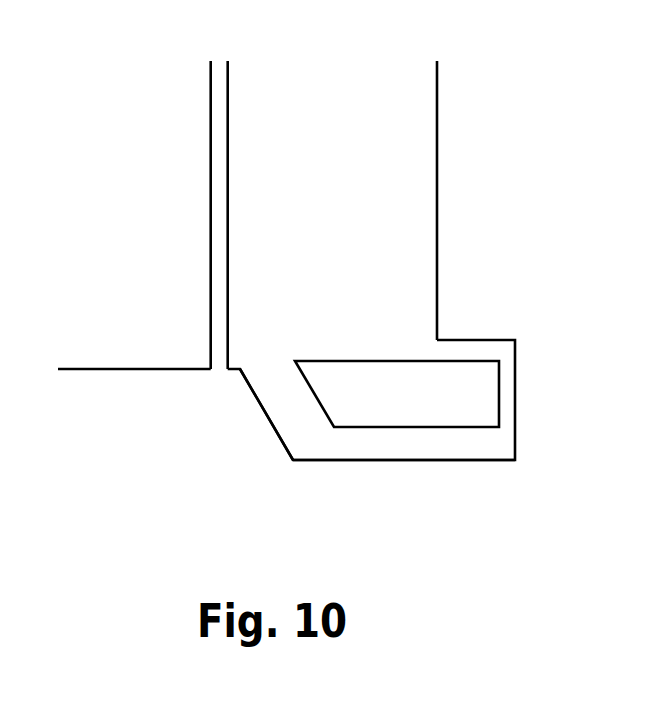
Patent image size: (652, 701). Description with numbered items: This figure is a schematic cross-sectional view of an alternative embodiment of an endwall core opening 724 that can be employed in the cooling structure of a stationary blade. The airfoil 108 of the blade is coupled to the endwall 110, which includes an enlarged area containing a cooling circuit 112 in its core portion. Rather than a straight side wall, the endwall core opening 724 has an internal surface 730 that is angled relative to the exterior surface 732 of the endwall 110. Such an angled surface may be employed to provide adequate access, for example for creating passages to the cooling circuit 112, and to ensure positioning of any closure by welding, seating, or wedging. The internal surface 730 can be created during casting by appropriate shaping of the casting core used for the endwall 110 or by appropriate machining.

The airfoil 108 is at (354, 170).
The endwall 110 is at (508, 368).
The cooling circuit 112 is at (445, 375).
The endwall core opening 724 is at (252, 441).
The internal surface 730 is at (255, 393).
The exterior surface 732 is at (322, 463).